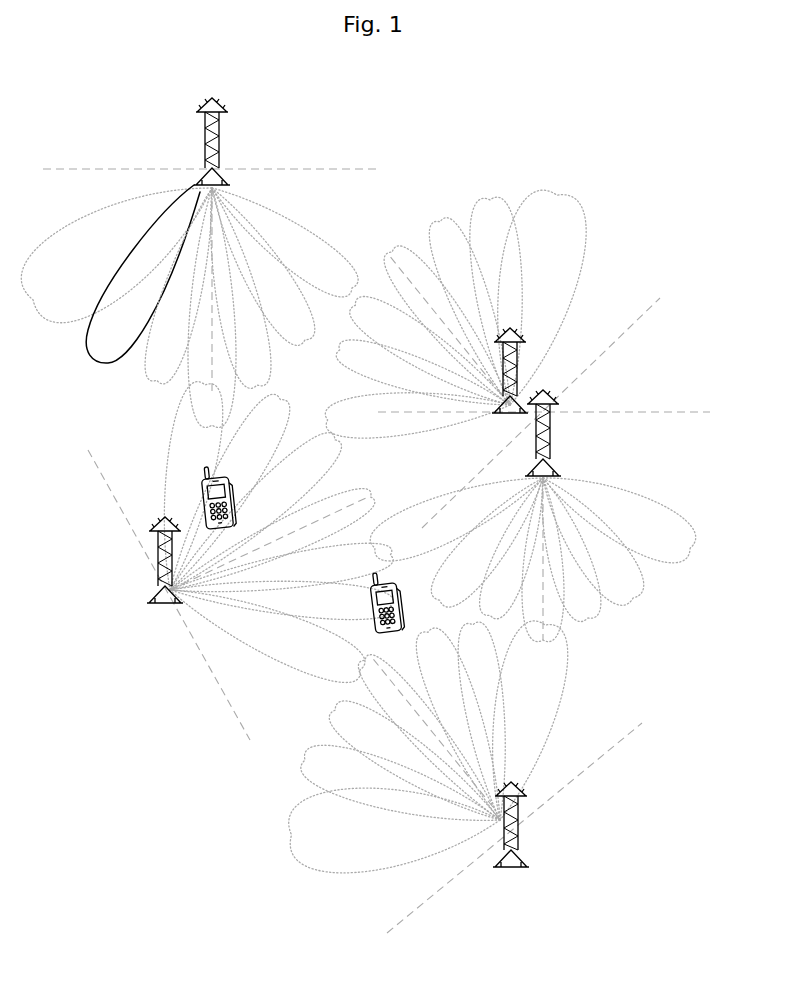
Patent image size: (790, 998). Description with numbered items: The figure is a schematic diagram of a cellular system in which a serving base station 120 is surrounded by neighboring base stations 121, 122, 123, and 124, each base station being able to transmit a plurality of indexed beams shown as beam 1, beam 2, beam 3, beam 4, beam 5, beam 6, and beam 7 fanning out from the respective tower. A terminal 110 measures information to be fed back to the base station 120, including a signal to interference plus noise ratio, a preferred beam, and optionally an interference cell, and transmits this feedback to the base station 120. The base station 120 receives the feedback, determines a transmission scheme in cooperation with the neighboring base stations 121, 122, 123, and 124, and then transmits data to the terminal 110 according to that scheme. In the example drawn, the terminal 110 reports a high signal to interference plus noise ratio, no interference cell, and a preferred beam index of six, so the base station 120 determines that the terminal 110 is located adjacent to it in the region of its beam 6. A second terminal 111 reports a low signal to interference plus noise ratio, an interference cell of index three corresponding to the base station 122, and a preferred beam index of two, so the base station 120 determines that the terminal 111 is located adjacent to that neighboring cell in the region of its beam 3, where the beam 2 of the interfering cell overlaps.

The beam 1 is at (301, 488).
The beam 2 is at (322, 504).
The beam 3 is at (349, 504).
The beam 4 is at (363, 510).
The beam 5 is at (382, 510).
The beam 6 is at (402, 510).
The beam 7 is at (425, 523).
The terminal 110 is at (203, 483).
The terminal 111 is at (372, 613).
The base station 120 is at (158, 550).
The neighboring base station 121 is at (520, 840).
The neighboring base station 122 is at (548, 432).
The neighboring base station 123 is at (515, 365).
The neighboring base station 124 is at (205, 122).